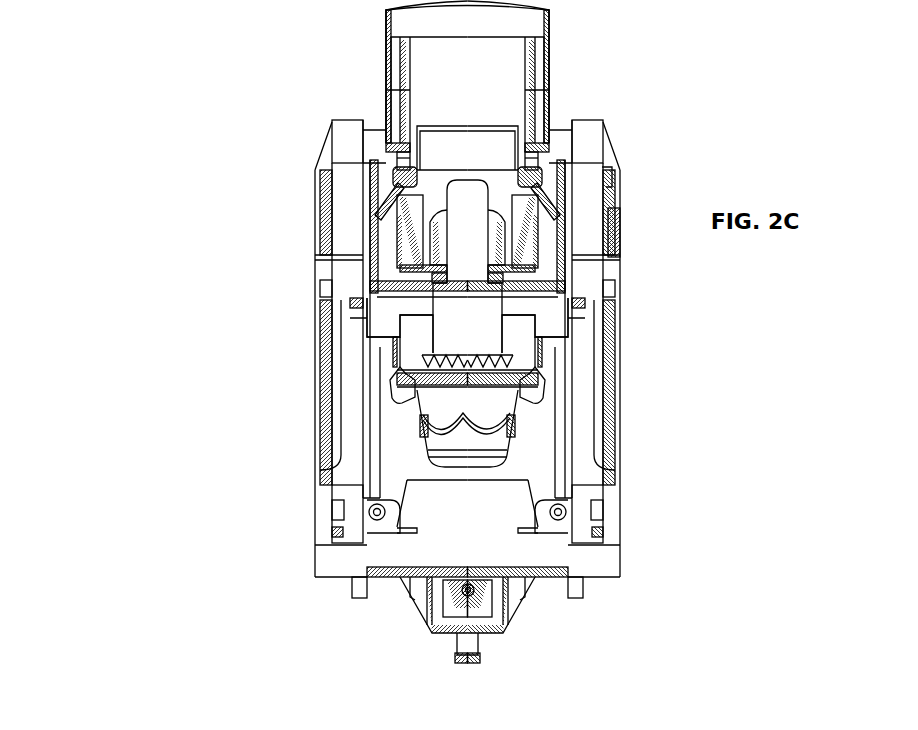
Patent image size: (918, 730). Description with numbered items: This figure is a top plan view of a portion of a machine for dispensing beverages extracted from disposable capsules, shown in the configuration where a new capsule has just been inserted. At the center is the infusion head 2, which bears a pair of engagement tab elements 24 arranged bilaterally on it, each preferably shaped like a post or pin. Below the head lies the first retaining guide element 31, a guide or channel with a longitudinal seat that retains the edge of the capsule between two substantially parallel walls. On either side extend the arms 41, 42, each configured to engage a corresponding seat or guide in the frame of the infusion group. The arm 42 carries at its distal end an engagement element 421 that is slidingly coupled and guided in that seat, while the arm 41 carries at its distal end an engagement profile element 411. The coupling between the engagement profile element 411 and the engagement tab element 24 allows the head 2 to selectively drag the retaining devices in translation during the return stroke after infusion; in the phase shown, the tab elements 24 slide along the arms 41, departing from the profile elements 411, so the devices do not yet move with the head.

The infusion head 2 is at (467, 266).
The engagement tab element 24 is at (352, 317).
The first retaining guide element 31 is at (397, 395).
The arm 41 is at (582, 331).
The arm 42 is at (582, 396).
The engagement profile element 411 is at (355, 302).
The engagement element 421 is at (534, 71).